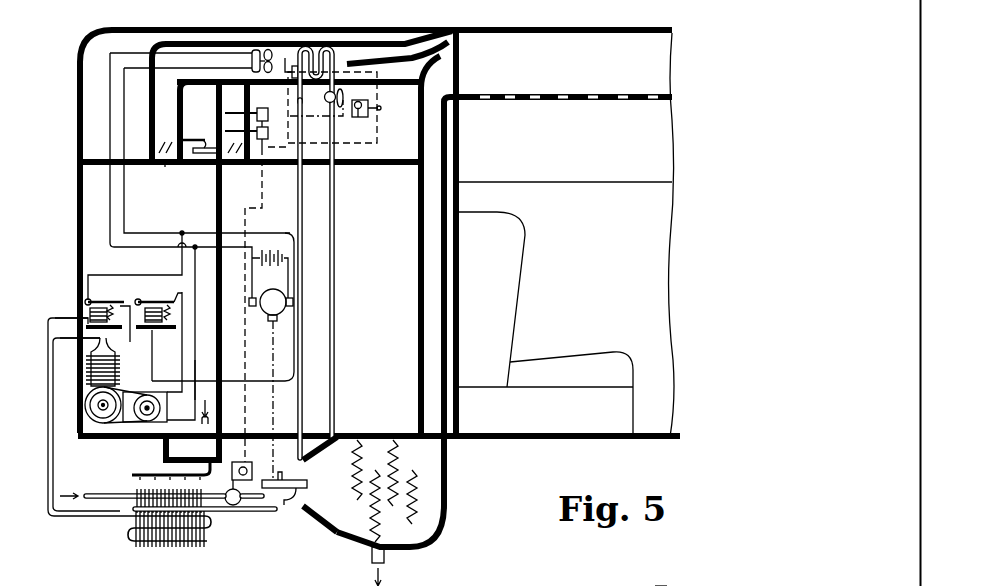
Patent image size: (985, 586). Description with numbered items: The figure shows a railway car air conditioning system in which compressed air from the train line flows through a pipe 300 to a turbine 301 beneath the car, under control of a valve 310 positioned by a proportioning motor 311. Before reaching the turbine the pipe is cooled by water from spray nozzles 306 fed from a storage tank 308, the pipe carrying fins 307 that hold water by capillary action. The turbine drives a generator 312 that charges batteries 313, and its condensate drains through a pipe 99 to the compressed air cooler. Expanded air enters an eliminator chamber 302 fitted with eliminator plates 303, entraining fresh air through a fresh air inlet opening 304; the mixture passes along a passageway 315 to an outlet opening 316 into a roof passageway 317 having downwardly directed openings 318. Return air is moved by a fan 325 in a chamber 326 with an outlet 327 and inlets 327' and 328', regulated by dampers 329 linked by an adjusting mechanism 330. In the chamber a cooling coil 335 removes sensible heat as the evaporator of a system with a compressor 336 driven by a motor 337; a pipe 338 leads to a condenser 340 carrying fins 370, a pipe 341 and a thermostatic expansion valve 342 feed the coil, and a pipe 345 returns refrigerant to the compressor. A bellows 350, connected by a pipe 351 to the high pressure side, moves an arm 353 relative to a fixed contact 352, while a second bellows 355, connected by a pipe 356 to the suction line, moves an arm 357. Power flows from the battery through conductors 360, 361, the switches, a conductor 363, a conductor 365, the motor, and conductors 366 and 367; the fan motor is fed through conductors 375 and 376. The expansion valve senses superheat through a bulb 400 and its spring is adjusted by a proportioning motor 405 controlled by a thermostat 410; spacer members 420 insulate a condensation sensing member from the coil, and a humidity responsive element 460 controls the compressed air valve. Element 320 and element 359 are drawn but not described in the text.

The pipe 99 is at (255, 513).
The pipe 300 is at (118, 493).
The turbine 301 is at (280, 478).
The eliminator chamber 302 is at (447, 508).
The eliminator plates 303 is at (401, 470).
The fresh air inlet opening 304 is at (307, 487).
The spray nozzles 306 is at (157, 470).
The fins 307 is at (197, 490).
The storage tank 308 is at (181, 454).
The valve 310 is at (234, 506).
The proportioning motor 311 is at (250, 462).
The generator 312 is at (266, 314).
The batteries 313 is at (278, 266).
The passageway 315 is at (421, 360).
The outlet opening 316 is at (447, 70).
The passageway 317 is at (549, 74).
The downwardly directed openings 318 is at (527, 102).
The floor support wall 320 is at (452, 95).
The fan 325 is at (264, 48).
The chamber 326 is at (302, 47).
The outlet 327 is at (472, 224).
The inlet 327' is at (240, 168).
The inlet 328' is at (161, 177).
The dampers 329 is at (162, 143).
The adjusting mechanism 330 is at (203, 140).
The cooling coil 335 is at (336, 70).
The compressor 336 is at (85, 406).
The motor 337 is at (147, 423).
The pipe 338 is at (95, 519).
The condenser 340 is at (132, 541).
The pipe 341 is at (336, 376).
The thermostatic expansion valve 342 is at (327, 100).
The pipe 345 is at (303, 206).
The bellows 350 is at (78, 323).
The pipe 351 is at (99, 331).
The fixed contact 352 is at (124, 302).
The arm 353 is at (94, 300).
The second bellows 355 is at (153, 333).
The pipe 356 is at (153, 380).
The arm 357 is at (145, 302).
The contact 359 is at (170, 290).
The conductor 360 is at (284, 233).
The conductor 361 is at (180, 263).
The conductor 363 is at (132, 336).
The conductor 365 is at (183, 330).
The conductor 366 is at (195, 368).
The conductor 367 is at (200, 251).
The fins 370 is at (178, 548).
The conductor 375 is at (142, 233).
The conductor 376 is at (122, 248).
The bulb 400 is at (294, 73).
The proportioning motor 405 is at (368, 118).
The thermostat 410 is at (252, 106).
The spacer members 420 is at (661, 578).
The humidity responsive element 460 is at (256, 293).